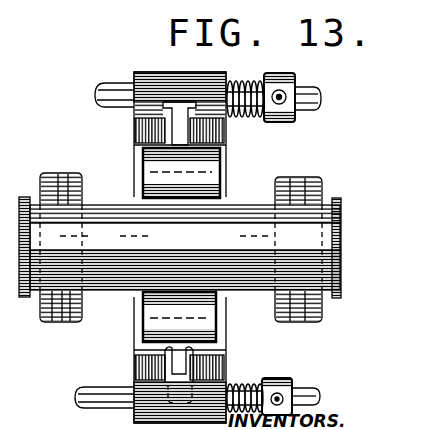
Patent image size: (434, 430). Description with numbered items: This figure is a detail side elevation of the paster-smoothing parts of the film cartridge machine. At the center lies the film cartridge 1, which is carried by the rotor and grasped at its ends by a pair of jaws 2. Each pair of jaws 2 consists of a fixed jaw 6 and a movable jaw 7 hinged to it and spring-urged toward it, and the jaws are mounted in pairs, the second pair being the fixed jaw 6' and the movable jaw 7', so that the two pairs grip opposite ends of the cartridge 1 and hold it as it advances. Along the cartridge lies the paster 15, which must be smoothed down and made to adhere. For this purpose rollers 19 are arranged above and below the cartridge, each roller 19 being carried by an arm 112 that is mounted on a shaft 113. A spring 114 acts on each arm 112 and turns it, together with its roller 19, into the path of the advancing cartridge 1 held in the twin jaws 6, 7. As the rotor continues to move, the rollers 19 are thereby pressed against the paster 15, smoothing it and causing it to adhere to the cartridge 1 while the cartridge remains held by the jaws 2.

The film cartridge 1 is at (118, 205).
The pair of jaws 2 is at (36, 200).
The fixed jaw 6 is at (48, 316).
The fixed jaw 6' is at (302, 321).
The movable jaw 7 is at (59, 173).
The movable jaw 7' is at (299, 175).
The paster 15 is at (226, 207).
The roller 19 is at (197, 178).
The arm 112 is at (178, 134).
The shaft 113 is at (124, 72).
The spring 114 is at (244, 90).